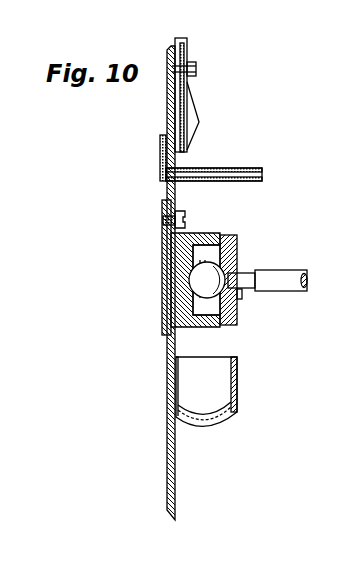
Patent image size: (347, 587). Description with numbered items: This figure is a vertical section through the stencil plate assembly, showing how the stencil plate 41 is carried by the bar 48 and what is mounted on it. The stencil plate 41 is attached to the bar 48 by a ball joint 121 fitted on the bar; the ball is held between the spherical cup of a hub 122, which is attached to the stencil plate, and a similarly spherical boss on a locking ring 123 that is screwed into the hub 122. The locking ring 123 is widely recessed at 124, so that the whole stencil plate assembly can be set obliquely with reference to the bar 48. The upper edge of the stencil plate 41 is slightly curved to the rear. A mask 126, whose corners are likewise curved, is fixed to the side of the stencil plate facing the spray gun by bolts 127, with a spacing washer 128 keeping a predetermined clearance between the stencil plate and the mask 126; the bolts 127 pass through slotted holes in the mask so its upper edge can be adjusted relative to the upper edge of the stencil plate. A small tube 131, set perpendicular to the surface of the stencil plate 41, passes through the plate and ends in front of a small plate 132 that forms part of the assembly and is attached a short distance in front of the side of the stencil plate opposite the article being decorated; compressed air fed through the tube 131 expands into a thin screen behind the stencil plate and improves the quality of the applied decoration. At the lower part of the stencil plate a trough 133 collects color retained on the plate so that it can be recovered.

The stencil plate 41 is at (167, 378).
The bar 48 is at (277, 279).
The ball joint 121 is at (221, 263).
The hub 122 is at (196, 238).
The locking ring 123 is at (238, 320).
The recess 124 is at (241, 298).
The mask 126 is at (186, 114).
The bolts 127 is at (196, 67).
The spacing washer 128 is at (184, 60).
The small tube 131 is at (222, 172).
The small plate 132 is at (161, 163).
The trough 133 is at (231, 368).